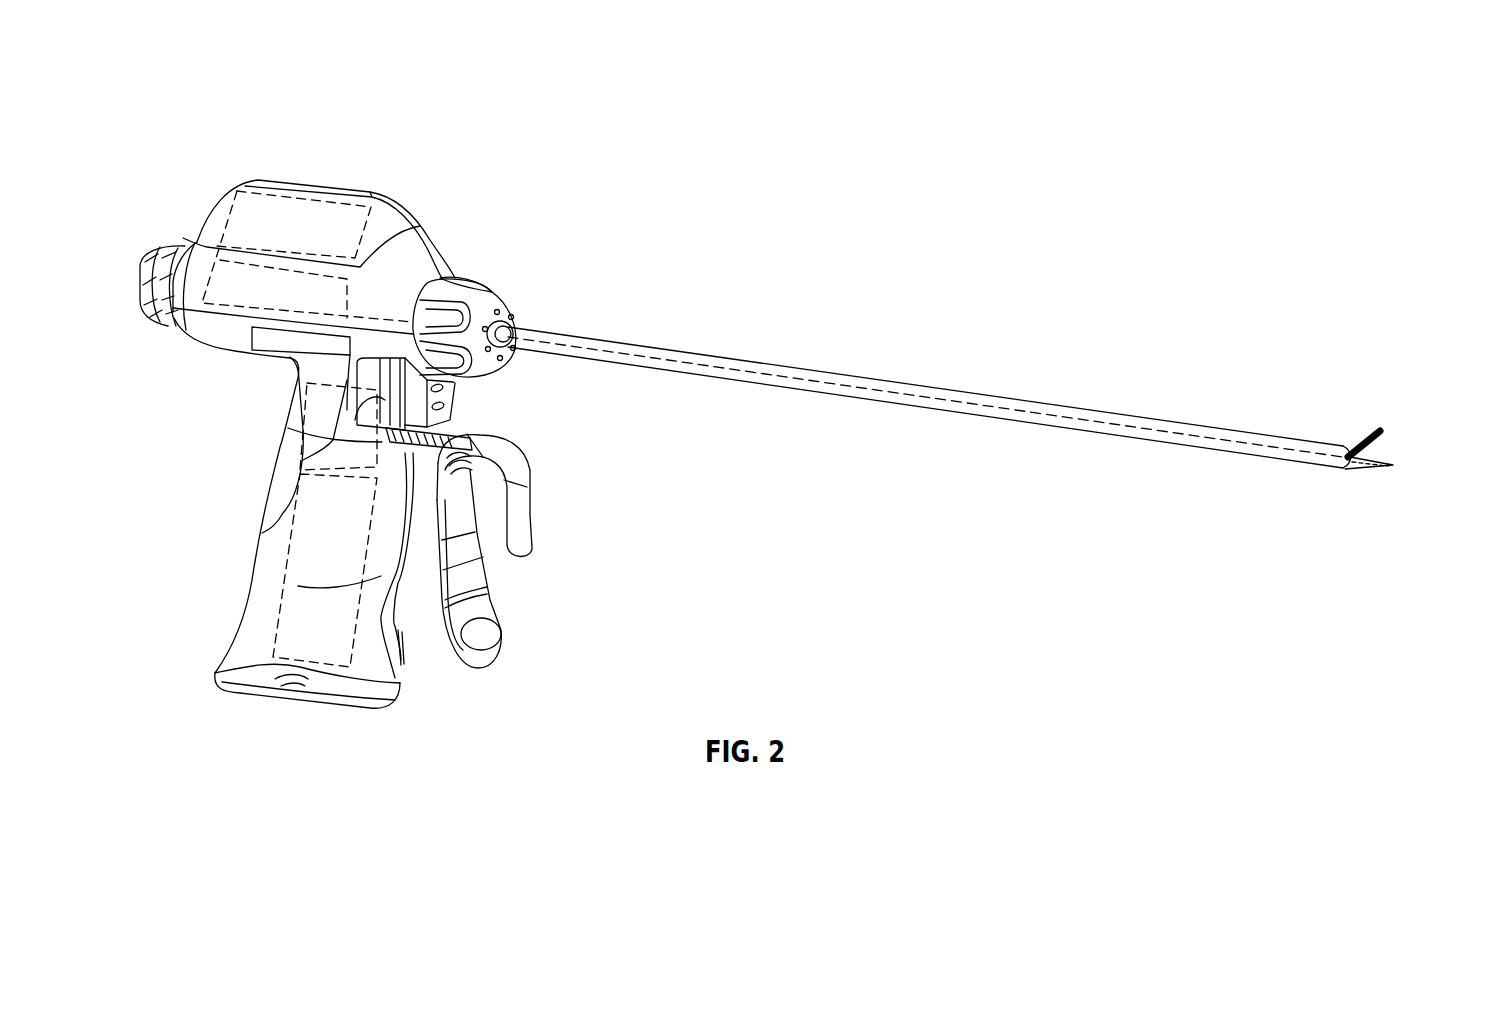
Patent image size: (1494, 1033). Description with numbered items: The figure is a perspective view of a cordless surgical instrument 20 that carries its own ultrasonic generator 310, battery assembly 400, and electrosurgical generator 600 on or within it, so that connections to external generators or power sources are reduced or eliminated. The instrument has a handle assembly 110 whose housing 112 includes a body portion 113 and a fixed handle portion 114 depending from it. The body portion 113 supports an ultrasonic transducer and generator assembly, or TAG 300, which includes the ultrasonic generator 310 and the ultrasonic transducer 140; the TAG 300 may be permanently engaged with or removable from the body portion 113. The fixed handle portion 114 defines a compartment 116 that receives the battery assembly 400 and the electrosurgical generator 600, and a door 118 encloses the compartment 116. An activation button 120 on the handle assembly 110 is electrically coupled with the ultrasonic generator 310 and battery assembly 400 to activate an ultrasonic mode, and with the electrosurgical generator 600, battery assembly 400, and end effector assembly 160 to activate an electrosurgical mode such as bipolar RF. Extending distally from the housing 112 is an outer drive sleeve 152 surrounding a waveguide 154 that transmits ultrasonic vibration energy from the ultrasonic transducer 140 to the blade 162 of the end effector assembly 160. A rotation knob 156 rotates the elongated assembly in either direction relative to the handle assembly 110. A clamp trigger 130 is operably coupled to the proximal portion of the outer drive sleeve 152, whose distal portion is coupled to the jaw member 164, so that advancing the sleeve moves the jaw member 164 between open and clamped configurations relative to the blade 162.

The surgical instrument 20 is at (726, 254).
The ultrasonic transducer and generator assembly (TAG) 300 is at (240, 146).
The handle assembly 110 is at (262, 374).
The housing 112 is at (205, 330).
The body portion 113 is at (425, 240).
The fixed handle portion 114 is at (265, 562).
The compartment 116 is at (402, 691).
The door 118 is at (336, 693).
The activation button 120 is at (453, 397).
The clamp trigger 130 is at (527, 527).
The ultrasonic transducer 140 is at (232, 275).
The outer drive sleeve 152 is at (950, 415).
The waveguide 154 is at (762, 380).
The rotation knob 156 is at (500, 300).
The end effector assembly 160 is at (1393, 489).
The blade 162 is at (1395, 468).
The jaw member 164 is at (1367, 432).
The ultrasonic generator 310 is at (369, 185).
The battery assembly 400 is at (265, 636).
The electrosurgical generator 600 is at (290, 412).